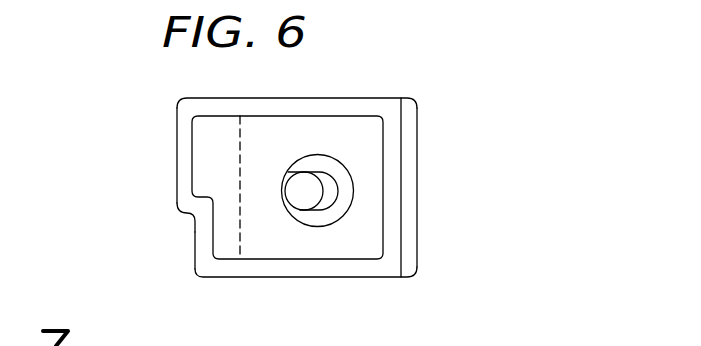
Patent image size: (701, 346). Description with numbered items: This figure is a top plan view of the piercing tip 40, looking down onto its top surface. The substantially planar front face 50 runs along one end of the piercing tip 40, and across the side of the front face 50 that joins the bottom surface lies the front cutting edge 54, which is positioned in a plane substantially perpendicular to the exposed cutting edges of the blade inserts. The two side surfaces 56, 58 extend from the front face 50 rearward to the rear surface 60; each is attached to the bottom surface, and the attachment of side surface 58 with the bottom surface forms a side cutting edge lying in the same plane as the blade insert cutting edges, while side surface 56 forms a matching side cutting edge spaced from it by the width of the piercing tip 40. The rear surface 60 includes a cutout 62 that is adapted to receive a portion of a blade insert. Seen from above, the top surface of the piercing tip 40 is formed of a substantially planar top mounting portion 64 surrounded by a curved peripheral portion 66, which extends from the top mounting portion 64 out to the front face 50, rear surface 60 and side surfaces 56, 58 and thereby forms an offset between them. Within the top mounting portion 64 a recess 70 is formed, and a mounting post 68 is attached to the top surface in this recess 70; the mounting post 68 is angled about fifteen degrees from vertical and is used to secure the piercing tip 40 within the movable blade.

The piercing tip 40 is at (155, 132).
The front face 50 is at (415, 172).
The front cutting edge 54 is at (418, 197).
The side surface 56 is at (378, 83).
The side surface 58 is at (327, 280).
The rear surface 60 is at (177, 168).
The cutout 62 is at (193, 217).
The top mounting portion 64 is at (288, 152).
The curved peripheral portion 66 is at (383, 271).
The mounting post 68 is at (320, 205).
The recess 70 is at (325, 160).